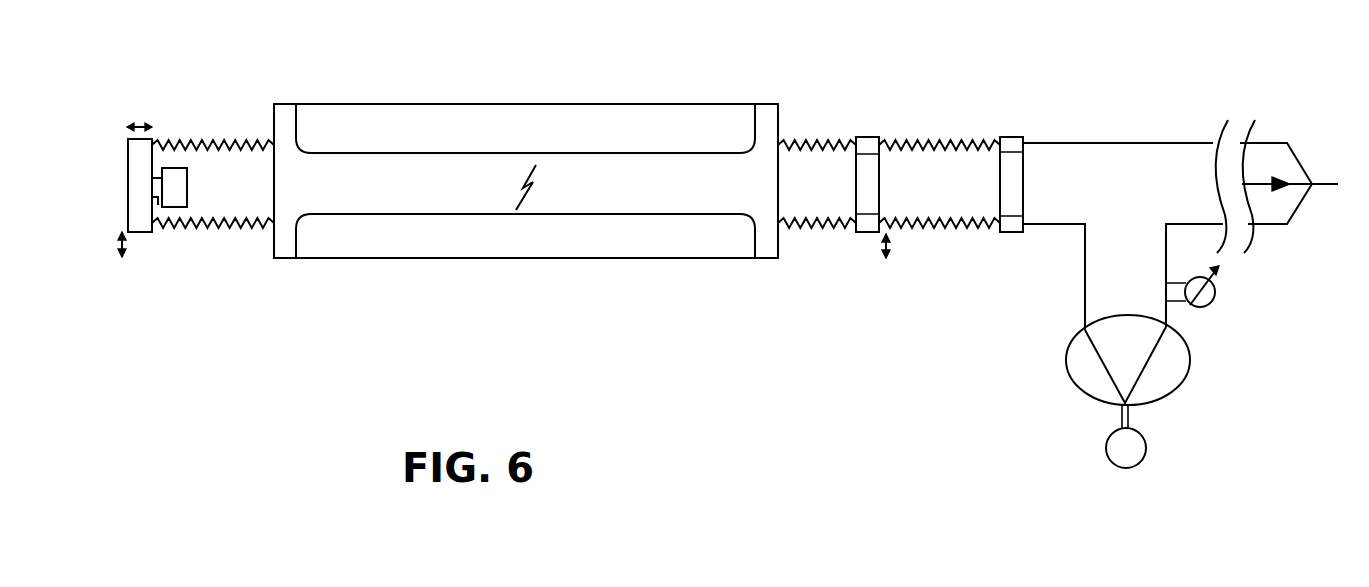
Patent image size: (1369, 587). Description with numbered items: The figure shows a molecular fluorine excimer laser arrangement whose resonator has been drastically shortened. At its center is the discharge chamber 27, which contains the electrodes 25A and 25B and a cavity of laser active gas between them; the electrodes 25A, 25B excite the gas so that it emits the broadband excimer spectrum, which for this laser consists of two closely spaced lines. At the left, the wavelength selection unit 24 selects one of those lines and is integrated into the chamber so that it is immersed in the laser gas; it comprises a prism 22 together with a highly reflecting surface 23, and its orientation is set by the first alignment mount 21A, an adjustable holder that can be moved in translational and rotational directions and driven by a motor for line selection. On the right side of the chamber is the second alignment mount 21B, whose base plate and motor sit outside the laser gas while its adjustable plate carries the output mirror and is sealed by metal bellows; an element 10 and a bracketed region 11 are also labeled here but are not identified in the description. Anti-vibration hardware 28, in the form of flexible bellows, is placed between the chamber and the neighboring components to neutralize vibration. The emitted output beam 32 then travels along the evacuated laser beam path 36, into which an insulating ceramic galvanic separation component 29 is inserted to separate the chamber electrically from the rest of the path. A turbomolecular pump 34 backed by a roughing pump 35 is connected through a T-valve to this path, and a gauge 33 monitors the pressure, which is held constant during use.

The aperture 10 is at (871, 203).
The aperture unit 11 is at (860, 216).
The first alignment mount 21A is at (128, 168).
The second alignment mount 21B is at (879, 172).
The prism 22 is at (177, 207).
The highly reflecting surface 23 is at (157, 239).
The wavelength selection unit 24 is at (162, 242).
The electrode 25A is at (525, 128).
The electrode 25B is at (525, 236).
The discharge chamber 27 is at (274, 87).
The anti-vibration hardware 28 is at (970, 140).
The galvanic separation component 29 is at (1008, 137).
The emitted output beam 32 is at (1325, 183).
The gauge 33 is at (1215, 292).
The turbomolecular pump 34 is at (1173, 360).
The roughing pump 35 is at (1165, 436).
The evacuated laser beam path 36 is at (1124, 322).